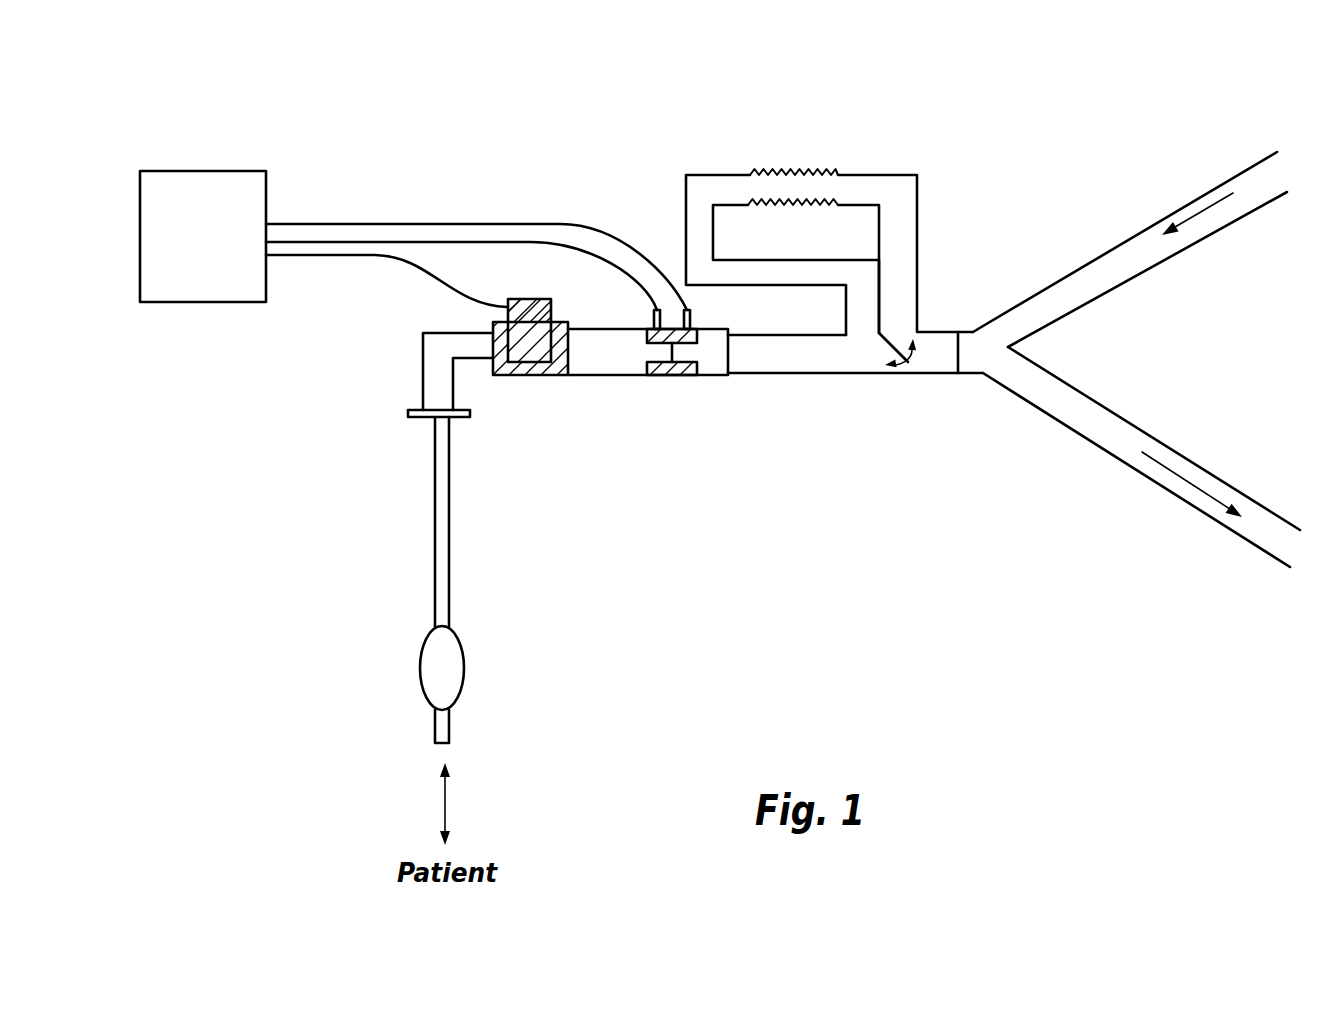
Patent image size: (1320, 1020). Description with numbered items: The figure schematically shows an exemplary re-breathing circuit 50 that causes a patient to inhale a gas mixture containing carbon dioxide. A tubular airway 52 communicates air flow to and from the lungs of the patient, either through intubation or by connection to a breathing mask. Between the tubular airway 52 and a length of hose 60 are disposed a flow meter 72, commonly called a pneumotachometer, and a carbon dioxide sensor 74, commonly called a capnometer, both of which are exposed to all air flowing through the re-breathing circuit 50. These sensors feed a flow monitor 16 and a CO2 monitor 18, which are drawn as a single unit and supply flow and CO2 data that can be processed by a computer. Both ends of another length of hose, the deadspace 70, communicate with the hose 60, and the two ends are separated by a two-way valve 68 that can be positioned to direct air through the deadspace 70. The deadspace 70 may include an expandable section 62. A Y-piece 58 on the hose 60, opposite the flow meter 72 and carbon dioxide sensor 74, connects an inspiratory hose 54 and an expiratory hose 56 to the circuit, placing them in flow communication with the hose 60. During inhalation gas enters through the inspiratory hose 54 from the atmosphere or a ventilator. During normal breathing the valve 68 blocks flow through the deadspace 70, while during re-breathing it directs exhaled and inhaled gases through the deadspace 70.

The flow monitor 16 is at (203, 190).
The CO2 monitor 18 is at (209, 187).
The re-breathing circuit 50 is at (1136, 311).
The tubular airway 52 is at (433, 547).
The inspiratory hose 54 is at (1165, 257).
The expiratory hose 56 is at (1147, 432).
The Y-piece 58 is at (963, 332).
The hose 60 is at (747, 358).
The expandable section 62 is at (793, 150).
The two-way valve 68 is at (915, 395).
The deadspace 70 is at (905, 209).
The flow meter 72 is at (663, 395).
The carbon dioxide sensor 74 is at (535, 405).